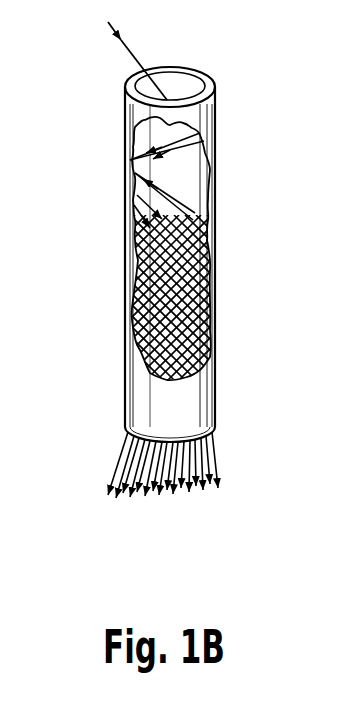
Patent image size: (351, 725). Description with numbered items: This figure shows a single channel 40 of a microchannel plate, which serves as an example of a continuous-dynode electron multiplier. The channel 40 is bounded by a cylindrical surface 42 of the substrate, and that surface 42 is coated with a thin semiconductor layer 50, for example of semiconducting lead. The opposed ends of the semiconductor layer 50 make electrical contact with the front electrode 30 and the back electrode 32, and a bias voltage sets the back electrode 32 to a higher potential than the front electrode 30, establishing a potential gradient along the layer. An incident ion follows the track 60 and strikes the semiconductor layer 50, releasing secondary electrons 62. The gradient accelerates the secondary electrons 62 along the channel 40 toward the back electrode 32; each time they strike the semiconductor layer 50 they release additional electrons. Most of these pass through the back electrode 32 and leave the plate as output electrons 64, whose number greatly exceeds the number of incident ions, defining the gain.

The front electrode 30 is at (178, 67).
The back electrode 32 is at (215, 430).
The channel 40 is at (222, 205).
The cylindrical surface 42 is at (122, 363).
The semiconductor layer 50 is at (178, 88).
The track of an incident ion 60 is at (132, 66).
The secondary electrons 62 is at (141, 183).
The output electrons 64 is at (112, 465).